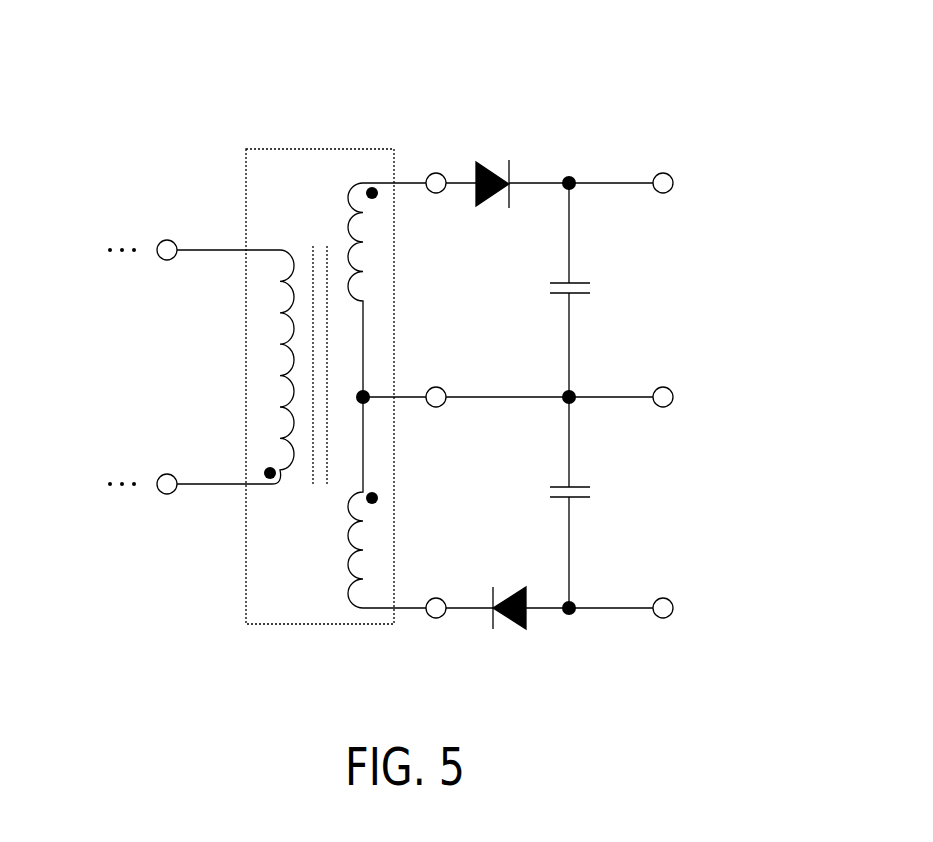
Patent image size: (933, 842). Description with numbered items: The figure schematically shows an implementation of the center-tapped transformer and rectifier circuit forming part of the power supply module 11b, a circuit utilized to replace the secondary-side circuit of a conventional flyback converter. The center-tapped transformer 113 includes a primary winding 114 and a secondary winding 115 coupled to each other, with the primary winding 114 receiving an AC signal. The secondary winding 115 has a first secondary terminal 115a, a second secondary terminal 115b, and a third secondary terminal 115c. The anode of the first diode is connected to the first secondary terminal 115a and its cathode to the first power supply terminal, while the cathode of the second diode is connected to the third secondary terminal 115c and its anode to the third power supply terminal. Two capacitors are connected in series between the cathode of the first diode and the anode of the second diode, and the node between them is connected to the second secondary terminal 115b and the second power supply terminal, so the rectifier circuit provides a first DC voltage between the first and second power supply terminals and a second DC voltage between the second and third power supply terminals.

The power supply module 11b is at (728, 107).
The center-tapped transformer 113 is at (322, 149).
The primary winding 114 is at (292, 466).
The secondary winding 115 is at (348, 594).
The first secondary terminal 115a is at (435, 167).
The second secondary terminal 115b is at (435, 377).
The third secondary terminal 115c is at (432, 588).